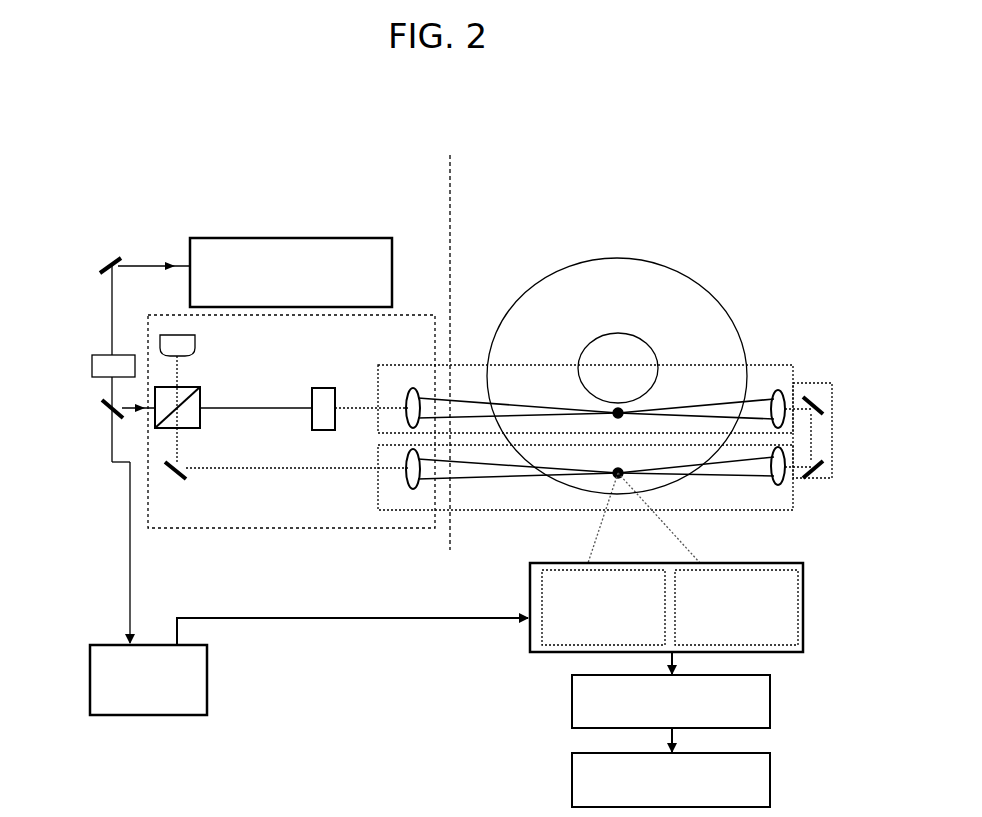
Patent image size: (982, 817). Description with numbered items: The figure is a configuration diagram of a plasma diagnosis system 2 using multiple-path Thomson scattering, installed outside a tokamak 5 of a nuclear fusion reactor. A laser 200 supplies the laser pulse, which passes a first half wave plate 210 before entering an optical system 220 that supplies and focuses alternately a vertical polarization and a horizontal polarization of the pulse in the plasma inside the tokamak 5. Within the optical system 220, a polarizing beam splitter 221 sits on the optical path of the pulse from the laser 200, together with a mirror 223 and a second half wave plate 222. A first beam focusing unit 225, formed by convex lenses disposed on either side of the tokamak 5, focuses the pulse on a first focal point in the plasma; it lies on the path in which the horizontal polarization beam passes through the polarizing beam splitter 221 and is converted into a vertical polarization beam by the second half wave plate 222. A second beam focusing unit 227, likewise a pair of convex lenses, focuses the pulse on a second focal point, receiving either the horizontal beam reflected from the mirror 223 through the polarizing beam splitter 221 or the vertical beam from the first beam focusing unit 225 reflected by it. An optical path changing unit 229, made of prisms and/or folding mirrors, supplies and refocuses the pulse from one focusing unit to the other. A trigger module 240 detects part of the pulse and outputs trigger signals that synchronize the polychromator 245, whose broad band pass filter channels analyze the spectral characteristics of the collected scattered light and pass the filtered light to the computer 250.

The plasma diagnosis system 2 is at (771, 228).
The tokamak 5 is at (657, 258).
The laser 200 is at (316, 238).
The first half wave plate 210 is at (97, 378).
The optical system 220 is at (205, 528).
The polarizing beam splitter 221 is at (212, 398).
The second half wave plate 222 is at (300, 423).
The mirror 223 is at (195, 343).
The first beam focusing unit 225 is at (778, 388).
The second beam focusing unit 227 is at (768, 510).
The optical path changing unit 229 is at (820, 482).
The trigger module 240 is at (207, 685).
The polychromator 245 is at (770, 700).
The computer 250 is at (770, 780).